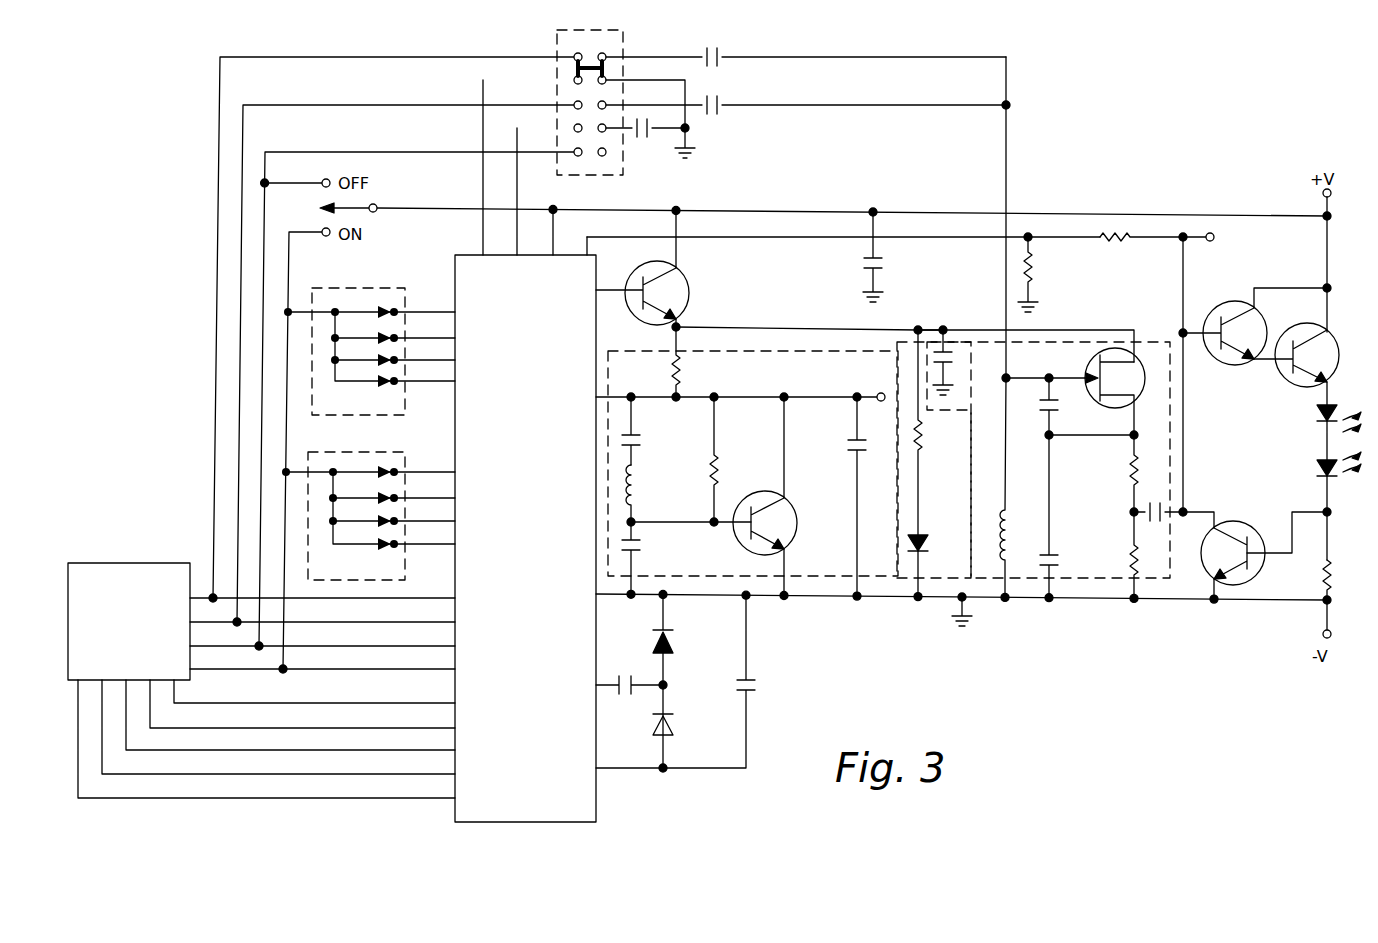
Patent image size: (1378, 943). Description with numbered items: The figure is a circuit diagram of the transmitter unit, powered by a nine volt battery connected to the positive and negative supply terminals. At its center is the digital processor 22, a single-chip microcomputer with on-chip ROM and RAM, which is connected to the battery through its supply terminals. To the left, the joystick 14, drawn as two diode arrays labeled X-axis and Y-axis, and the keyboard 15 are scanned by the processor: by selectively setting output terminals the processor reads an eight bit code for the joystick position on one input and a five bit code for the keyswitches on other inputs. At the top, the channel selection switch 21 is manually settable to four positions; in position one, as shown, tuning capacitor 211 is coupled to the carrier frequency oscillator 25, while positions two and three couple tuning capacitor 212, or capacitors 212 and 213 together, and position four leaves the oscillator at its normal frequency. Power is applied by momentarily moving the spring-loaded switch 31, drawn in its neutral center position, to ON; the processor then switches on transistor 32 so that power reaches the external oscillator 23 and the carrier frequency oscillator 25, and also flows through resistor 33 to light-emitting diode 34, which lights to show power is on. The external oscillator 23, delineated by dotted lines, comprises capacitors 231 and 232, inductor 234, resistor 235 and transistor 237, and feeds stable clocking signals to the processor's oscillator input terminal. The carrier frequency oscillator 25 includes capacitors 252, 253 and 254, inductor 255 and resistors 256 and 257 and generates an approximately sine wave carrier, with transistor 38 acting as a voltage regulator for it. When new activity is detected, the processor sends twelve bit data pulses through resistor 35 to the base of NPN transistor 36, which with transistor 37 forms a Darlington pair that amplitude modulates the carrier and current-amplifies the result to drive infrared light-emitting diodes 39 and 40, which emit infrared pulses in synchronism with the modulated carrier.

The joystick 14 is at (386, 302).
The keyboard 15 is at (116, 576).
The channel selection switch 21 is at (626, 54).
The tuning capacitor 211 is at (720, 55).
The tuning capacitor 212 is at (720, 105).
The capacitor 213 is at (646, 141).
The digital processor 22 is at (597, 812).
The external oscillator 23 is at (747, 482).
The capacitor 231 is at (678, 376).
The capacitor 232 is at (644, 557).
The inductor 234 is at (636, 508).
The resistor 235 is at (720, 481).
The transistor 237 is at (785, 517).
The carrier frequency oscillator 25 is at (1073, 470).
The capacitor 252 is at (1056, 405).
The capacitor 253 is at (1052, 558).
The capacitor 254 is at (1128, 510).
The inductor 255 is at (1004, 524).
The resistor 256 is at (1128, 470).
The resistor 257 is at (1128, 565).
The switch 31 is at (318, 208).
The transistor 32 is at (681, 291).
The resistor 33 is at (928, 438).
The light-emitting diode 34 is at (928, 546).
The resistor 35 is at (1115, 244).
The NPN transistor 36 is at (1217, 312).
The transistor 37 is at (1301, 333).
The transistor 38 is at (1239, 534).
The infrared light-emitting diode 39 is at (1316, 417).
The infrared light-emitting diode 40 is at (1316, 467).